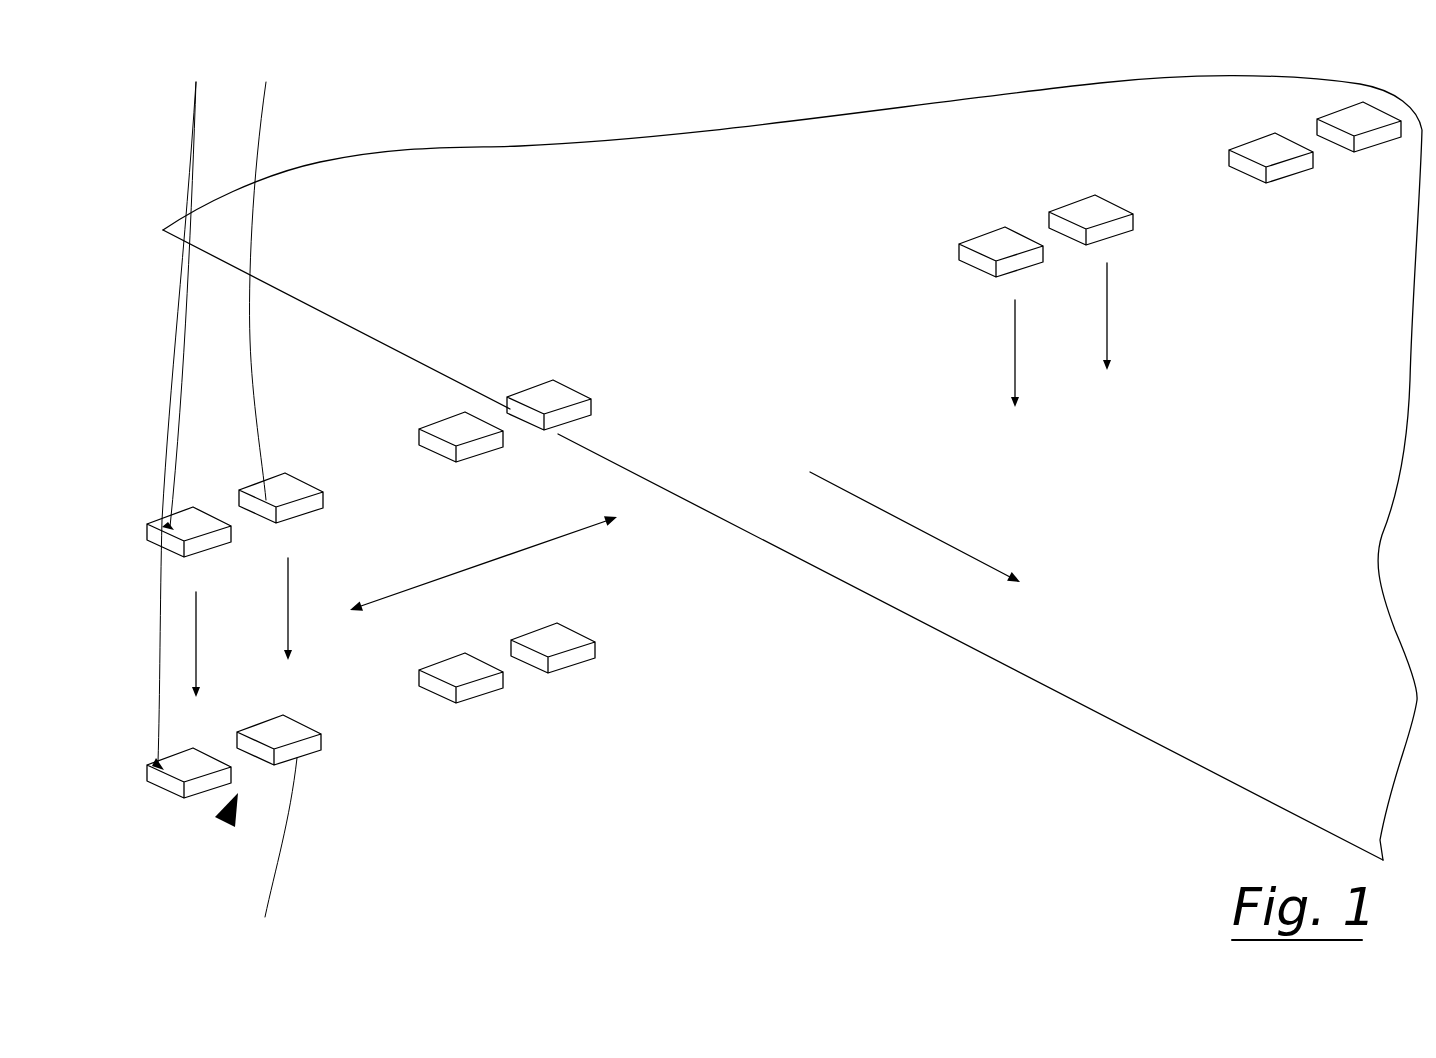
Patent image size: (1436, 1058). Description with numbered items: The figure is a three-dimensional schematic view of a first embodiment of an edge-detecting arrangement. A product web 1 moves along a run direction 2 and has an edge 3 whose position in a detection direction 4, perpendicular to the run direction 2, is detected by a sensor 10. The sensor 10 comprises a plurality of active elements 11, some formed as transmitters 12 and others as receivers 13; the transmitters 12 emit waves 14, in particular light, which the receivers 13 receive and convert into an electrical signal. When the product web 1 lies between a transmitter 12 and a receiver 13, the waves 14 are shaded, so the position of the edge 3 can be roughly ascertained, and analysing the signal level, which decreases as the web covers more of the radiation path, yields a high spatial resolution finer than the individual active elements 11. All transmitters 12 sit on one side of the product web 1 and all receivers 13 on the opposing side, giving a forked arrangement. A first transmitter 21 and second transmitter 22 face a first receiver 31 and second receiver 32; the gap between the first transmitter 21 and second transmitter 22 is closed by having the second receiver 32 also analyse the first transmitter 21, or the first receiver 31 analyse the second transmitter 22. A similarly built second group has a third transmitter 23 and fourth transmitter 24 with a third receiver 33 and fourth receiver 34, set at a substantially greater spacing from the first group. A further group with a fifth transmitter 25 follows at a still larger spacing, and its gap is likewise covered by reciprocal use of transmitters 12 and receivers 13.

The product web 1 is at (300, 190).
The run direction 2 is at (895, 517).
The edge 3 is at (967, 642).
The detection direction 4 is at (438, 580).
The sensor 10 is at (226, 822).
The active elements 11 is at (183, 412).
The transmitters 12 is at (267, 277).
The receivers 13 is at (273, 852).
The waves 14 is at (293, 612).
The first transmitter 21 is at (195, 517).
The second transmitter 22 is at (283, 498).
The third transmitter 23 is at (453, 432).
The fourth transmitter 24 is at (547, 400).
The fifth transmitter 25 is at (993, 250).
The first receiver 31 is at (212, 777).
The second receiver 32 is at (298, 742).
The third receiver 33 is at (470, 688).
The fourth receiver 34 is at (562, 660).